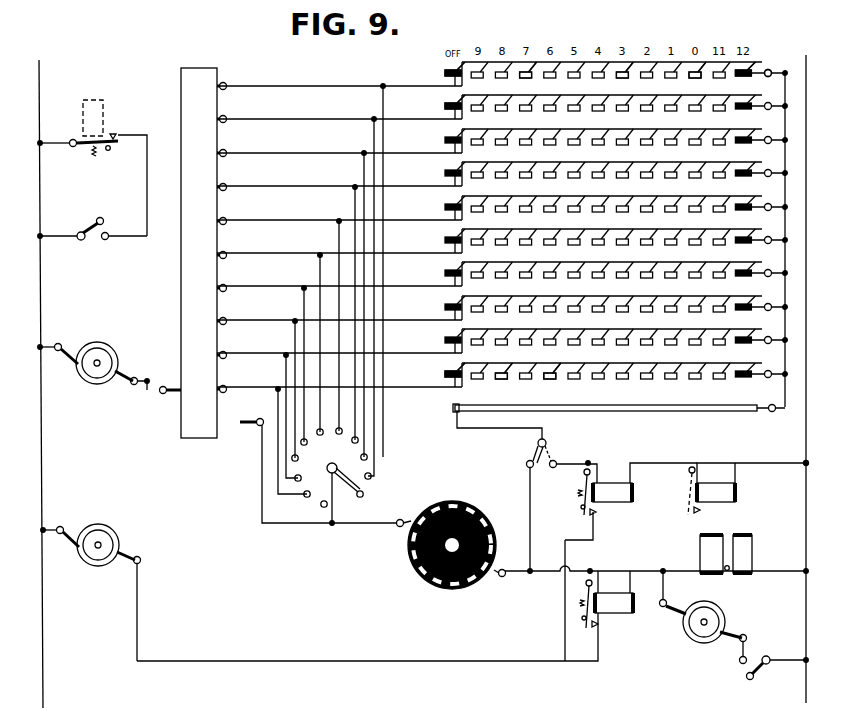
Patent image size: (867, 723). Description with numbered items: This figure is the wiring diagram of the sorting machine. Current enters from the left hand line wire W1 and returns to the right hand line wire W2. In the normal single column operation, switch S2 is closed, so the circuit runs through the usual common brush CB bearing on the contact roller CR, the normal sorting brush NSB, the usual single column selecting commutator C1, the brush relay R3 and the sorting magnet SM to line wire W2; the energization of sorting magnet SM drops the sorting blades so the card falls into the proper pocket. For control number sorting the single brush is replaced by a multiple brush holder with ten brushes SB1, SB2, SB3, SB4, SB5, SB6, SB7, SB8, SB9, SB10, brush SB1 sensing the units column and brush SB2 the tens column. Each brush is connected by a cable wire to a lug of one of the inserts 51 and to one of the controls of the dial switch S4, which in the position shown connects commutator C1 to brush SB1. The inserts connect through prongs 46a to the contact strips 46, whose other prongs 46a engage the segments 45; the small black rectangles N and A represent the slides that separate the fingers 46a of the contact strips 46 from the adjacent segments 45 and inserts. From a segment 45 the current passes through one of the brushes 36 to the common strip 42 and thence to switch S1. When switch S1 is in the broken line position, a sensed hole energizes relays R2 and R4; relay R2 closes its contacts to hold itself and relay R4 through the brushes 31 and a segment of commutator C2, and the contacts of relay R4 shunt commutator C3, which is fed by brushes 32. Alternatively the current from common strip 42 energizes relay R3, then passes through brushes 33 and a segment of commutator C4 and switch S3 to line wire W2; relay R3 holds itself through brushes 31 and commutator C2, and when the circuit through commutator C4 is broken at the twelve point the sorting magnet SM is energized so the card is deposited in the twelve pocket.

The left hand line wire W1 is at (42, 467).
The right hand line wire W2 is at (806, 430).
The relay R4 is at (100, 120).
The switch S2 is at (88, 229).
The commutator C3 is at (98, 355).
The brushes 32 is at (63, 355).
The common brush CB is at (165, 397).
The contact roller CR is at (192, 437).
The brush SB1 is at (230, 84).
The brush SB2 is at (230, 117).
The brush SB3 is at (230, 151).
The brush SB4 is at (230, 185).
The brush SB5 is at (230, 219).
The brush SB6 is at (230, 253).
The brush SB7 is at (230, 286).
The brush SB8 is at (230, 319).
The brush SB9 is at (230, 353).
The brush SB10 is at (230, 387).
The slide N is at (450, 70).
The insert 51 is at (446, 74).
The segment 45 is at (533, 72).
The contact strip 46 is at (613, 63).
The prong 46a is at (693, 68).
The slide A is at (735, 70).
The brushes 36 is at (757, 72).
The common strip 42 is at (640, 412).
The dial switch S4 is at (340, 455).
The brush NSB is at (252, 426).
The single column selecting commutator C1 is at (448, 590).
The switch S1 is at (538, 446).
The relay R2 is at (614, 490).
The brush relay R3 is at (615, 600).
The sorting magnet SM is at (742, 552).
The commutator C4 is at (712, 615).
The brushes 33 is at (733, 633).
The switch S3 is at (764, 670).
The commutator C2 is at (97, 533).
The brushes 31 is at (120, 567).